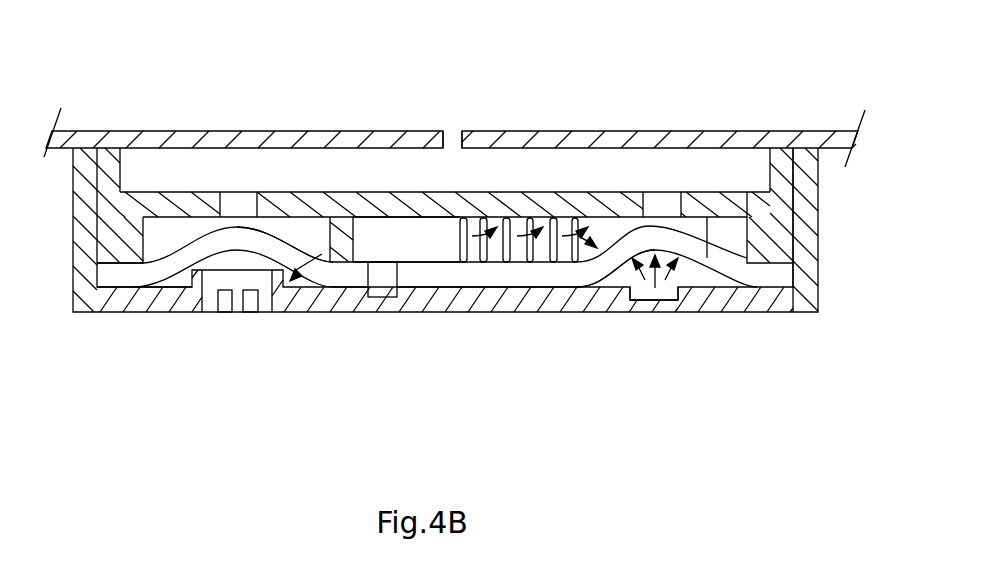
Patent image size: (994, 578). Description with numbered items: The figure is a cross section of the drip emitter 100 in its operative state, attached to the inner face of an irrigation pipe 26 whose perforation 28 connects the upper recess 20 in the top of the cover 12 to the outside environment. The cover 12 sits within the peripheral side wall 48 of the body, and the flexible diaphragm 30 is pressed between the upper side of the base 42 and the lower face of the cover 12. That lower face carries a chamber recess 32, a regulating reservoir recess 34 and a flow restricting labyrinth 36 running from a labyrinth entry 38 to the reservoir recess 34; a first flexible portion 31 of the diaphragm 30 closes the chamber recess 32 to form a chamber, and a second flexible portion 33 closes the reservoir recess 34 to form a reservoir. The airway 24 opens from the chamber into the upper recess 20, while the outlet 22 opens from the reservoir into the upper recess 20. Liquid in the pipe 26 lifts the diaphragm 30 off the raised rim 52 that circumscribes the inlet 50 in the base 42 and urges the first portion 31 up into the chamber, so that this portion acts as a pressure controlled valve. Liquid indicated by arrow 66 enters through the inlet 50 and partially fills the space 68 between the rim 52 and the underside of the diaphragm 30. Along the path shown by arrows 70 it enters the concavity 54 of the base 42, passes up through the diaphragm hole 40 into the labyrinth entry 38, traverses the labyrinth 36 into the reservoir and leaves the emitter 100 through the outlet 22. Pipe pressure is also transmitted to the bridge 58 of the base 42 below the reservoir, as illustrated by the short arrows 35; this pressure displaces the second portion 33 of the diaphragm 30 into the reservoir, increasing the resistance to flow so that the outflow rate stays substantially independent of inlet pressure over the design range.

The drip emitter 100 is at (63, 204).
The cover 12 is at (808, 233).
The peripheral side wall 48 is at (819, 257).
The base 42 is at (791, 325).
The irrigation pipe 26 is at (132, 120).
The perforation 28 is at (461, 138).
The upper recess 20 is at (410, 193).
The airway 24 is at (236, 210).
The outlet 22 is at (678, 208).
The flexible diaphragm 30 is at (134, 280).
The chamber recess 32 is at (162, 242).
The first flexible portion 31 is at (302, 231).
The second flexible portion 33 is at (599, 225).
The regulating reservoir recess 34 is at (735, 240).
The labyrinth entry 38 is at (418, 246).
The flow path arrows 70 is at (340, 296).
The flow restricting labyrinth 36 is at (603, 248).
The short arrows 35 is at (680, 275).
The bridge 58 is at (655, 300).
The concavity 54 is at (320, 293).
The diaphragm hole 40 is at (380, 277).
The inlet 50 is at (265, 306).
The raised rim 52 is at (205, 272).
The liquid entering arrow 66 is at (238, 283).
The space 68 is at (176, 278).